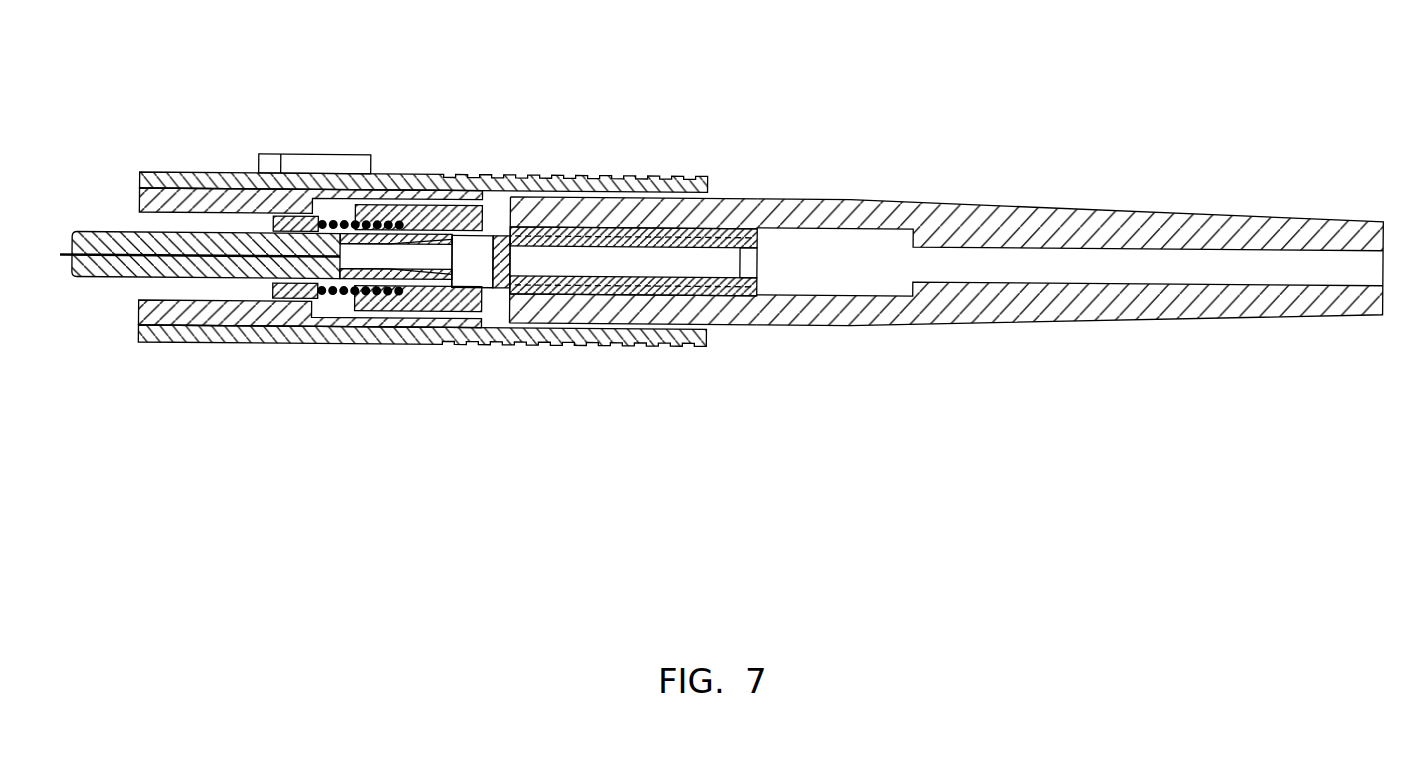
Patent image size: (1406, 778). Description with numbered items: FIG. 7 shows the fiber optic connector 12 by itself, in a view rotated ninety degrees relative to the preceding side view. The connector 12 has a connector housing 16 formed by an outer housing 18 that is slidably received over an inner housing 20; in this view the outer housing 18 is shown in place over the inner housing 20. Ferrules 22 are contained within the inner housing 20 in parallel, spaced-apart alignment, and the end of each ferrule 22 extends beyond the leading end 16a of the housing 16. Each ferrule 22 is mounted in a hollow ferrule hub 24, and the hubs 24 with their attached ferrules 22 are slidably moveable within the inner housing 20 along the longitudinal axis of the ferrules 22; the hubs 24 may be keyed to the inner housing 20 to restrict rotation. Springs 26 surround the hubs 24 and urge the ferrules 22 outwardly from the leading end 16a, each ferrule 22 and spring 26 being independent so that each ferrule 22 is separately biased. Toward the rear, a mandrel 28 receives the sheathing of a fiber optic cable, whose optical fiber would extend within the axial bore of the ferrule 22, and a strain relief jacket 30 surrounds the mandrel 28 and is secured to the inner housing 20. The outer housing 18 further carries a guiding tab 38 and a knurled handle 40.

The fiber optic connector 12 is at (782, 155).
The connector housing 16 is at (168, 172).
The leading end 16a is at (138, 328).
The outer housing 18 is at (232, 192).
The inner housing 20 is at (140, 200).
The ferrule 22 is at (72, 257).
The ferrule hub 24 is at (385, 272).
The spring 26 is at (337, 285).
The mandrel 28 is at (566, 283).
The strain relief jacket 30 is at (1023, 323).
The guiding tab 38 is at (370, 155).
The knurled handle 40 is at (553, 175).